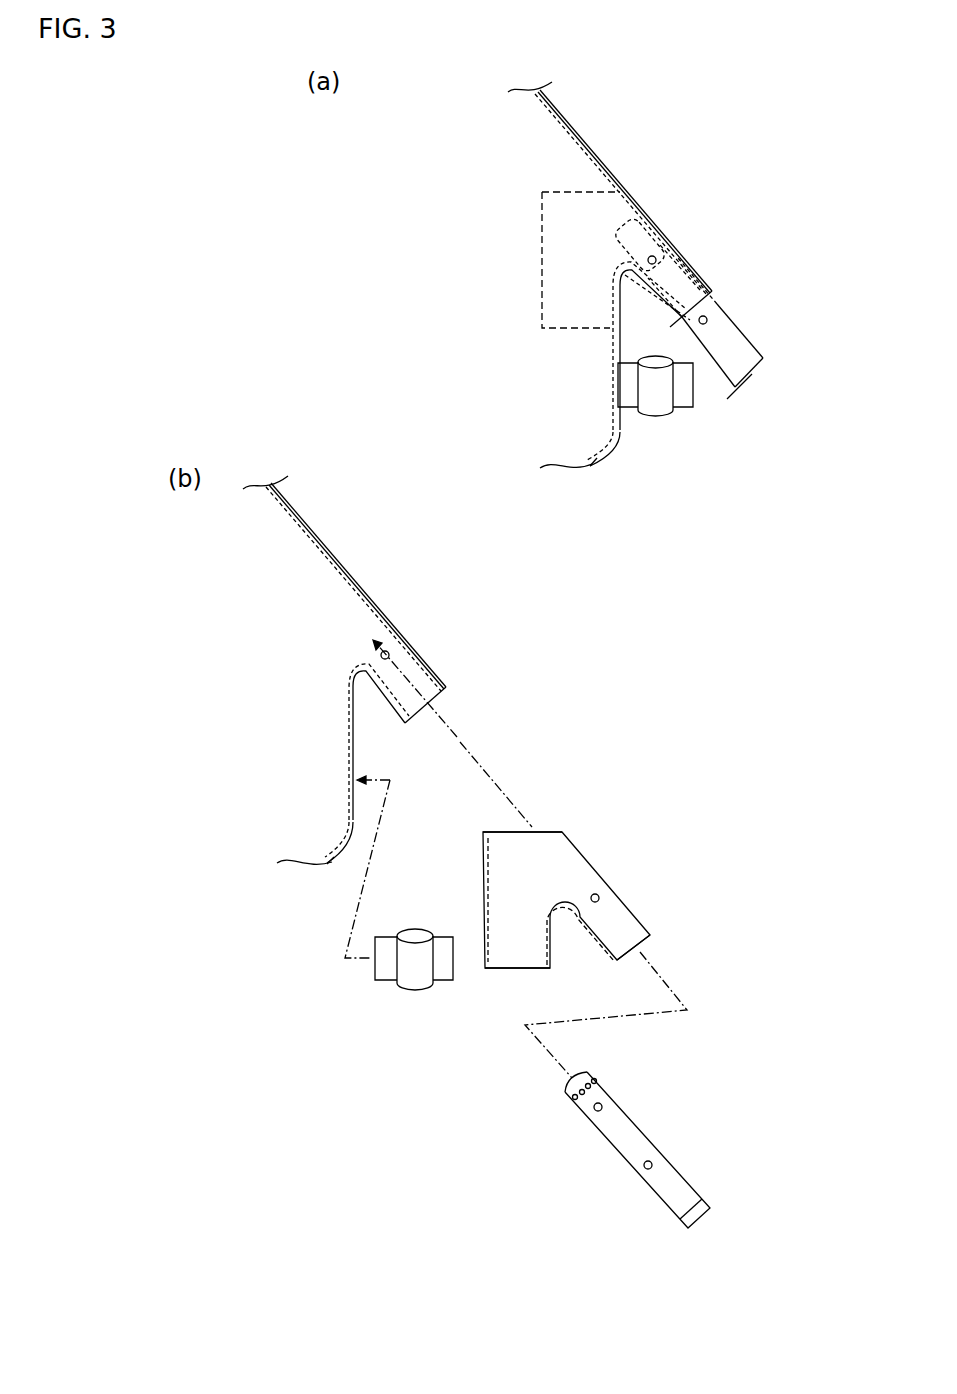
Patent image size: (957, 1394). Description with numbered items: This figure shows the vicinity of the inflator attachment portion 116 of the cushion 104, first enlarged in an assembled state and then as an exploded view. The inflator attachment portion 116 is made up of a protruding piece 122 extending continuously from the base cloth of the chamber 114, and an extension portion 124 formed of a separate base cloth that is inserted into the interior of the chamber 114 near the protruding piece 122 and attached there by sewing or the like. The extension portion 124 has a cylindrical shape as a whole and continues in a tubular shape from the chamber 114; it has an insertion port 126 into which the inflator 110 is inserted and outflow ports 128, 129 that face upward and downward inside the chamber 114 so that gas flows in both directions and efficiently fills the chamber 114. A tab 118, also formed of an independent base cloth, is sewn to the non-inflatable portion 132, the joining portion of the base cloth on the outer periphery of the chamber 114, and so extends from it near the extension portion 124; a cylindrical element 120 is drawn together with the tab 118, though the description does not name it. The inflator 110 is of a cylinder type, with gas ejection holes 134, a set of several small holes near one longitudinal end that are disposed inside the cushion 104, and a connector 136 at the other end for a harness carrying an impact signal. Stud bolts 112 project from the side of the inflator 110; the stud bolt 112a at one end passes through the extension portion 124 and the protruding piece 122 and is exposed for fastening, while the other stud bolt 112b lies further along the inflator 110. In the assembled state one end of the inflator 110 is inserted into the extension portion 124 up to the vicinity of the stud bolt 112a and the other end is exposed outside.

The cushion 104 is at (823, 136).
The inflator 110 is at (738, 340).
The stud bolts 112 is at (797, 245).
The stud bolt 112a is at (657, 257).
The stud bolt 112b is at (706, 318).
The chamber 114 is at (533, 132).
The inflator attachment portion 116 is at (724, 143).
The tab 118 is at (697, 393).
The cylindrical member 120 is at (643, 353).
The protruding piece 122 is at (657, 226).
The extension portion 124 is at (580, 192).
The insertion port 126 is at (645, 943).
The outflow port 128 is at (503, 828).
The outflow port 129 is at (512, 969).
The non-inflatable portion 132 is at (608, 453).
The gas ejection holes 134 is at (590, 1079).
The connector 136 is at (750, 378).